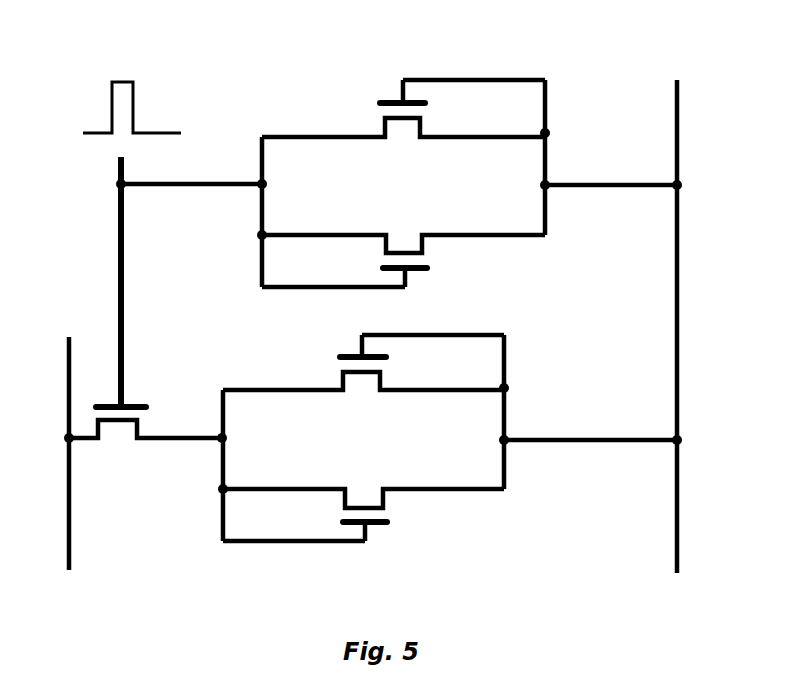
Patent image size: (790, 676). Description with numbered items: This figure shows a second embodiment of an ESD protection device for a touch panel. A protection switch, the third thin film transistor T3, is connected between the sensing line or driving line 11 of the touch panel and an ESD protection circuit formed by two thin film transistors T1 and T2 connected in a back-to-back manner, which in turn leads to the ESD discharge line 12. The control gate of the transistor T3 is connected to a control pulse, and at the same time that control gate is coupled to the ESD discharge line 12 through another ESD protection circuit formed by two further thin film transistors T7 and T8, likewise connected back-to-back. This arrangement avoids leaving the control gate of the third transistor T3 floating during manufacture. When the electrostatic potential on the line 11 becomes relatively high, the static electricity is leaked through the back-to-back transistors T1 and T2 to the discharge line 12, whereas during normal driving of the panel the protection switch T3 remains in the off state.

The sensing line 11 is at (67, 466).
The ESD discharge line 12 is at (676, 342).
The thin film transistor T1 is at (363, 355).
The thin film transistor T2 is at (363, 537).
The third thin film transistor T3 is at (145, 297).
The thin film transistor T7 is at (403, 108).
The thin film transistor T8 is at (403, 265).